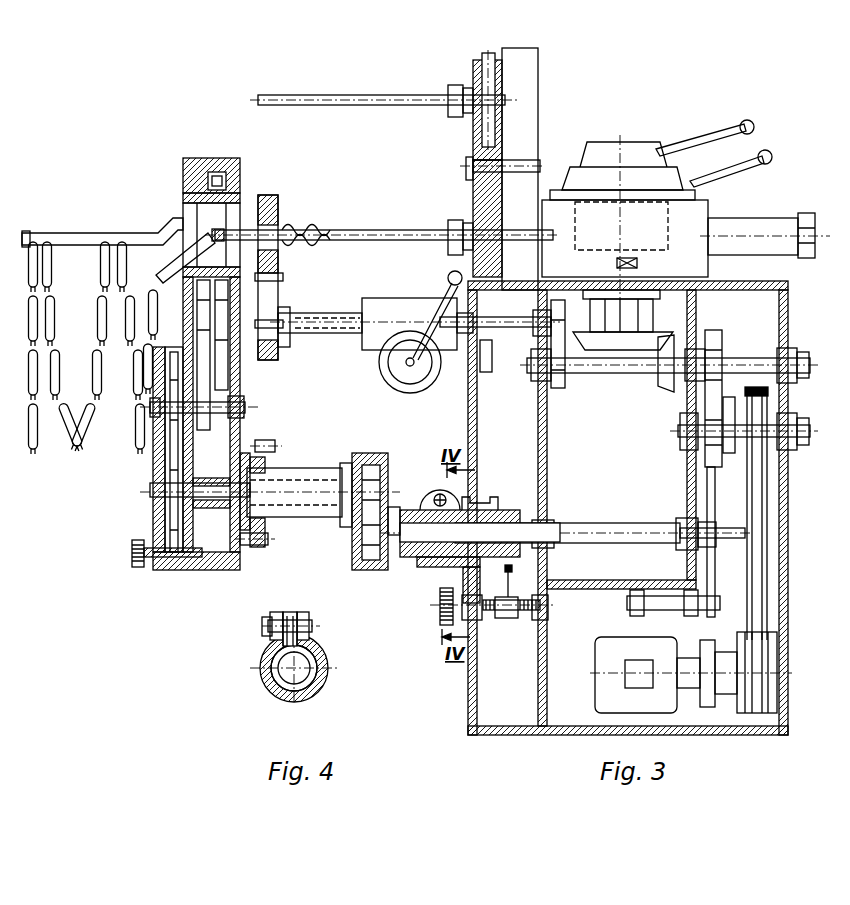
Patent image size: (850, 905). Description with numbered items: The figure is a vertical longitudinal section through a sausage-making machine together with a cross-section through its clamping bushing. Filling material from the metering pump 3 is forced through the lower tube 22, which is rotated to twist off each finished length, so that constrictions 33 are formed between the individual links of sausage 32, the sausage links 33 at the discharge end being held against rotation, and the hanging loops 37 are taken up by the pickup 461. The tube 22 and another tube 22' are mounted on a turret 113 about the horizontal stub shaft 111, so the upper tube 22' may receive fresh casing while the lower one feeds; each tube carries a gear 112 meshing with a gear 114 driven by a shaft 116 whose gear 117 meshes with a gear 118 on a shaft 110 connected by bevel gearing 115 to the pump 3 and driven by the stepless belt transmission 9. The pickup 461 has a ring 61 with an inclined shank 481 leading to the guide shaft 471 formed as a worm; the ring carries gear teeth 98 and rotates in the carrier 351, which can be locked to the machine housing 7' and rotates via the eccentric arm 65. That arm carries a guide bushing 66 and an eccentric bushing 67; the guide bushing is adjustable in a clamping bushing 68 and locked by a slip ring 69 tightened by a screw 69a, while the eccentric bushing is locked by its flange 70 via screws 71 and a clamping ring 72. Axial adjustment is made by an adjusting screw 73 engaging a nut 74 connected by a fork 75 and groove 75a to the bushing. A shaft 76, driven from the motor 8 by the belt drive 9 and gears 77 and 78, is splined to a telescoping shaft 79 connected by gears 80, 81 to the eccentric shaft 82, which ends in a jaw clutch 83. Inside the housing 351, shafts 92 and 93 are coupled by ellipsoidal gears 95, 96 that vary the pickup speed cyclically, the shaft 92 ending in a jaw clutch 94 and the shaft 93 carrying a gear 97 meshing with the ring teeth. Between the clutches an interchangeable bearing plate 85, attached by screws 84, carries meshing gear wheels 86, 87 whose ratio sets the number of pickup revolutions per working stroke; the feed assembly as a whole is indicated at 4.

In FIG. 3, the metering pump 3 is at (612, 130).
In FIG. 3, the feed drive assembly 4 is at (413, 212).
In FIG. 3, the machine housing 7' is at (598, 508).
In FIG. 3, the motor 8 is at (612, 641).
In FIG. 3, the stepless belt drive 9 is at (775, 542).
In FIG. 3, the tube 22 is at (382, 227).
In FIG. 3, the tube 22' is at (385, 88).
In FIG. 3, the sausage 32 is at (52, 258).
In FIG. 3, the sausage links / constrictions 33 is at (112, 296).
In FIG. 3, the chain link 37 is at (68, 452).
In FIG. 3, the ring 61 is at (211, 212).
In FIG. 3, the eccentric arm 65 is at (393, 468).
In FIG. 3, the guide bushing 66 is at (408, 554).
In FIG. 3, the eccentric bushing 67 is at (310, 474).
In FIG. 3, the clamping bushing 68 is at (433, 560).
In FIG. 4, the clamping bushing 68 is at (328, 676).
In FIG. 4, the slip ring 69 is at (312, 623).
In FIG. 4, the screw 69a is at (266, 628).
In FIG. 3, the flange 70 is at (247, 525).
In FIG. 3, the screws 71 is at (262, 548).
In FIG. 3, the clamping ring 72 is at (268, 455).
In FIG. 3, the adjusting screw 73 is at (440, 620).
In FIG. 3, the nut 74 is at (506, 621).
In FIG. 3, the fork 75 is at (509, 574).
In FIG. 3, the groove 75a is at (502, 500).
In FIG. 3, the shaft 76 is at (592, 523).
In FIG. 3, the gear 77 is at (725, 396).
In FIG. 3, the gear 78 is at (725, 490).
In FIG. 3, the shaft 79 is at (403, 528).
In FIG. 3, the gear 80 is at (353, 558).
In FIG. 3, the gear 81 is at (371, 465).
In FIG. 3, the eccentric shaft 82 is at (219, 493).
In FIG. 3, the jaw clutch 83 is at (183, 508).
In FIG. 3, the screws 84 is at (132, 558).
In FIG. 3, the bearing plate 85 is at (158, 466).
In FIG. 3, the gear wheel 86 is at (153, 512).
In FIG. 3, the gear wheel 87 is at (170, 432).
In FIG. 3, the shaft 92 is at (244, 410).
In FIG. 3, the shaft 93 is at (232, 350).
In FIG. 3, the jaw clutch 94 is at (192, 420).
In FIG. 3, the ellipsoidal gear 95 is at (186, 330).
In FIG. 3, the ellipsoidal gear 96 is at (196, 315).
In FIG. 3, the gear 97 is at (228, 320).
In FIG. 3, the gear teeth 98 is at (228, 182).
In FIG. 3, the shaft 110 is at (628, 380).
In FIG. 3, the horizontal stub shaft 111 is at (478, 147).
In FIG. 3, the gear / shaft 112 is at (487, 52).
In FIG. 3, the turret 113 is at (473, 198).
In FIG. 3, the gear 114 is at (495, 362).
In FIG. 3, the bevel gear 115 is at (668, 336).
In FIG. 3, the shaft 116 is at (538, 336).
In FIG. 3, the gear 117 is at (535, 303).
In FIG. 3, the gear 118 is at (559, 390).
In FIG. 3, the carrier / pickup housing 351 is at (262, 396).
In FIG. 3, the pickup 461 is at (128, 198).
In FIG. 3, the guide shaft 471 is at (65, 233).
In FIG. 3, the shank 481 is at (175, 222).